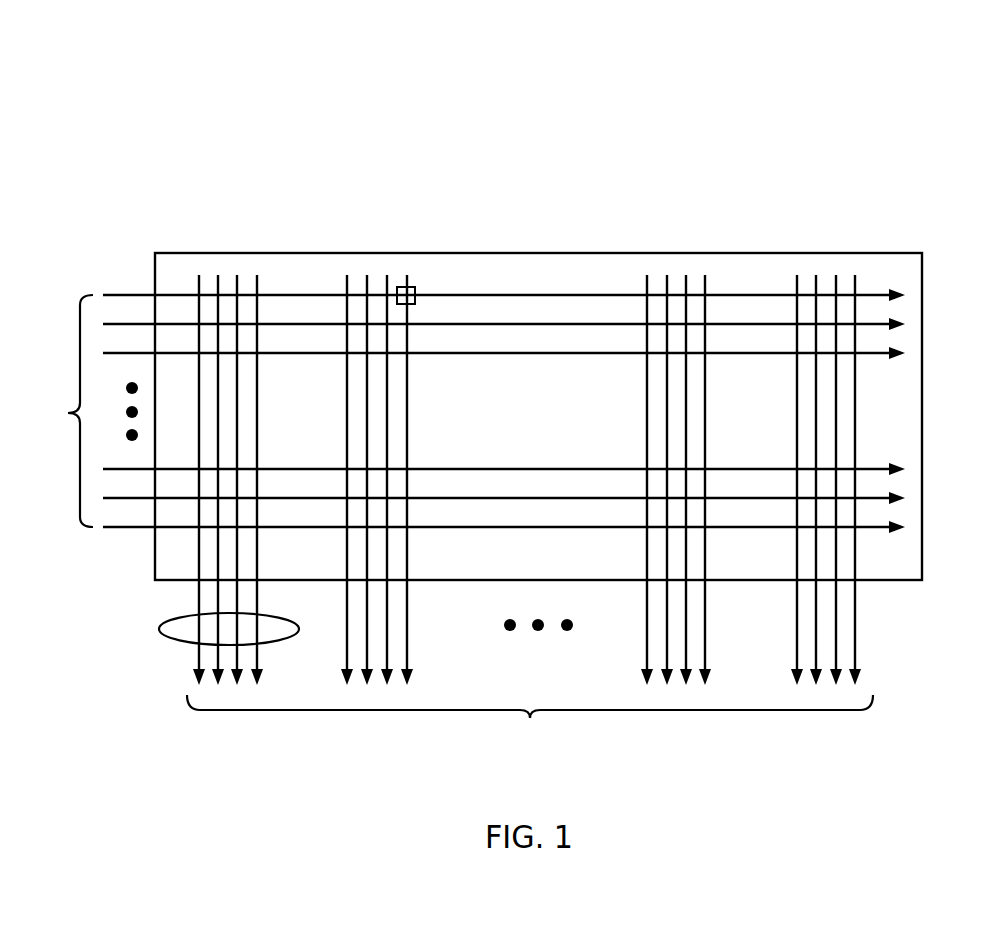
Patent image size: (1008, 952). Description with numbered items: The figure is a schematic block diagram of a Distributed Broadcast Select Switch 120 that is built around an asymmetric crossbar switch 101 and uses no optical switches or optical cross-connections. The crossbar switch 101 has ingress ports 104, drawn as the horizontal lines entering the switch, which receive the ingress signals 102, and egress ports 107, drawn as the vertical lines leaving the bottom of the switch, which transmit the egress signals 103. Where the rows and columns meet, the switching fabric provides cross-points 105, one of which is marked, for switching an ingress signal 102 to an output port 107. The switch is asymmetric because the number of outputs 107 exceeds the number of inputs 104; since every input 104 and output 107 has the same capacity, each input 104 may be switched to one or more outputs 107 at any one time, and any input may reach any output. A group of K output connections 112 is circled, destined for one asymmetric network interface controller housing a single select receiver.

The Distributed Broadcast Select Switch 120 is at (156, 100).
The asymmetric crossbar switch 101 is at (207, 253).
The ingress signals 102 is at (455, 383).
The egress signals 103 is at (468, 516).
The ingress port 104 is at (153, 293).
The cross-point 105 is at (415, 287).
The egress port 107 is at (197, 580).
The output connections 112 is at (160, 629).